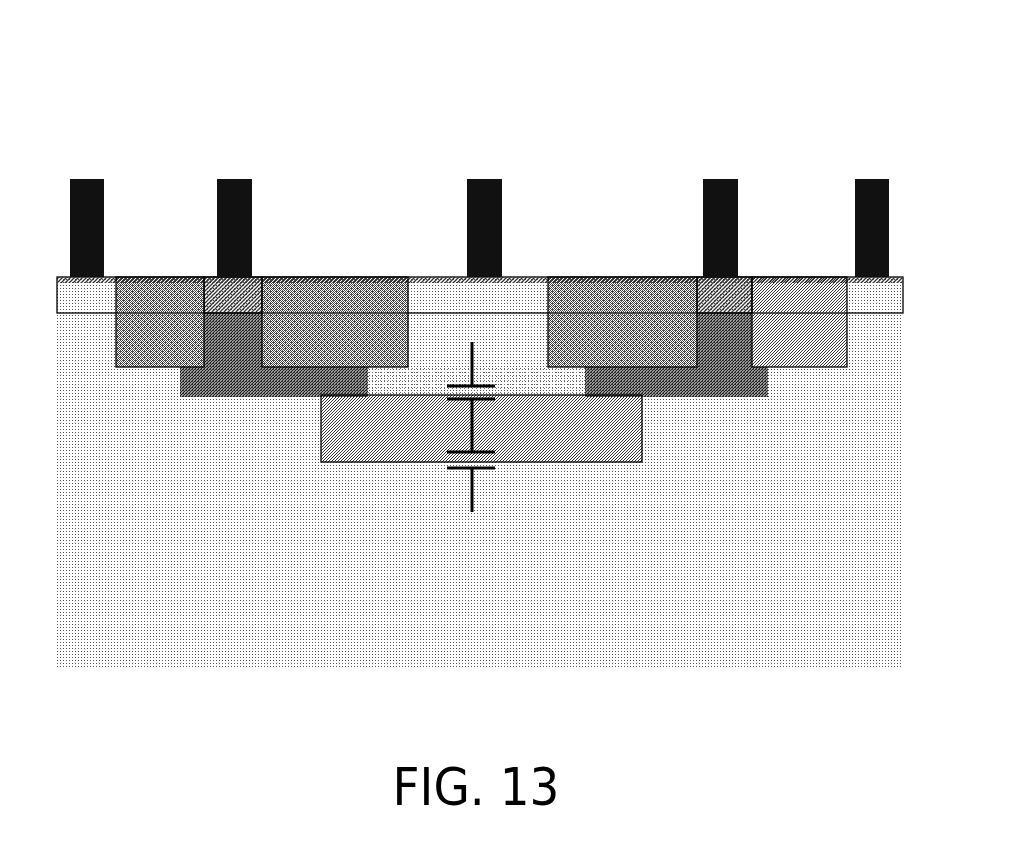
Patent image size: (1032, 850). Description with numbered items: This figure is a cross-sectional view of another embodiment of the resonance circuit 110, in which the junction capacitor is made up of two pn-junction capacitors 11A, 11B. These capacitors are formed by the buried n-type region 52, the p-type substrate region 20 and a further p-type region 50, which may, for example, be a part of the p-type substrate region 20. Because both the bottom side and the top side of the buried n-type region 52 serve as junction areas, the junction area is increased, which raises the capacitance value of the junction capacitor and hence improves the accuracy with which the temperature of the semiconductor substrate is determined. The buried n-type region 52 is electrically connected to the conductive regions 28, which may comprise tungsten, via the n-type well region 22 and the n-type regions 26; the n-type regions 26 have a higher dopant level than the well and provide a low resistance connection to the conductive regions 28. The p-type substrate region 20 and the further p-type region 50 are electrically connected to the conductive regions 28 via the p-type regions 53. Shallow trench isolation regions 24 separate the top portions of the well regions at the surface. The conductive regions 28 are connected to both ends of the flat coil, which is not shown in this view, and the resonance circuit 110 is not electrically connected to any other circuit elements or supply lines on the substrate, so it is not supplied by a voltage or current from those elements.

The resonance circuit 110 is at (208, 88).
The conductive region 28 is at (716, 179).
The further p-type region 50 is at (523, 330).
The p-type region 53 is at (497, 313).
The n-type contact region 26 is at (478, 296).
The n-type well region 22 is at (250, 384).
The shallow trench isolation region 24 is at (812, 336).
The pn-junction capacitor 11B is at (447, 385).
The pn-junction capacitor 11A is at (455, 475).
The buried n-type region 52 is at (354, 448).
The p-type substrate region 20 is at (648, 645).